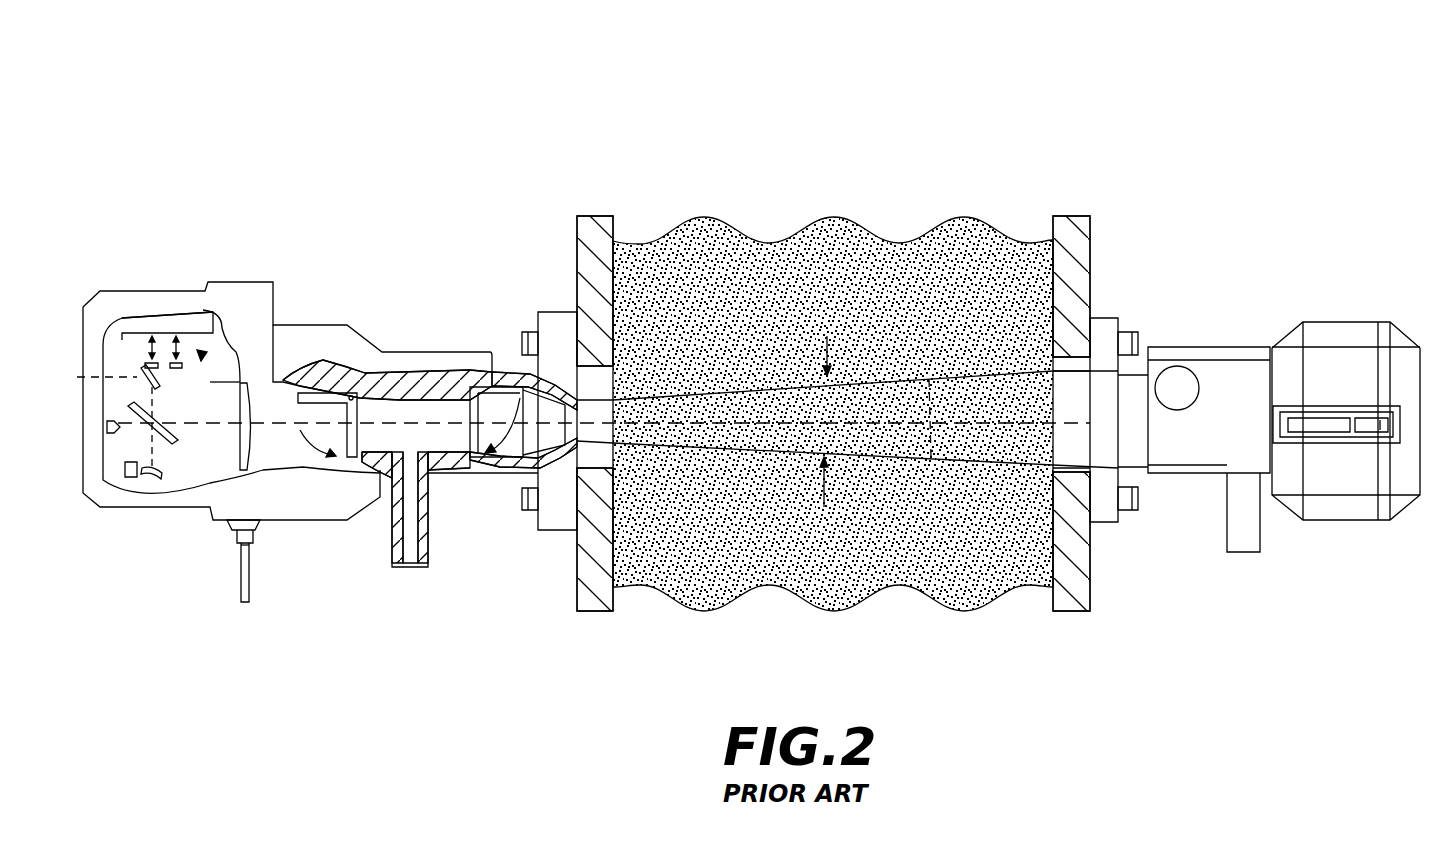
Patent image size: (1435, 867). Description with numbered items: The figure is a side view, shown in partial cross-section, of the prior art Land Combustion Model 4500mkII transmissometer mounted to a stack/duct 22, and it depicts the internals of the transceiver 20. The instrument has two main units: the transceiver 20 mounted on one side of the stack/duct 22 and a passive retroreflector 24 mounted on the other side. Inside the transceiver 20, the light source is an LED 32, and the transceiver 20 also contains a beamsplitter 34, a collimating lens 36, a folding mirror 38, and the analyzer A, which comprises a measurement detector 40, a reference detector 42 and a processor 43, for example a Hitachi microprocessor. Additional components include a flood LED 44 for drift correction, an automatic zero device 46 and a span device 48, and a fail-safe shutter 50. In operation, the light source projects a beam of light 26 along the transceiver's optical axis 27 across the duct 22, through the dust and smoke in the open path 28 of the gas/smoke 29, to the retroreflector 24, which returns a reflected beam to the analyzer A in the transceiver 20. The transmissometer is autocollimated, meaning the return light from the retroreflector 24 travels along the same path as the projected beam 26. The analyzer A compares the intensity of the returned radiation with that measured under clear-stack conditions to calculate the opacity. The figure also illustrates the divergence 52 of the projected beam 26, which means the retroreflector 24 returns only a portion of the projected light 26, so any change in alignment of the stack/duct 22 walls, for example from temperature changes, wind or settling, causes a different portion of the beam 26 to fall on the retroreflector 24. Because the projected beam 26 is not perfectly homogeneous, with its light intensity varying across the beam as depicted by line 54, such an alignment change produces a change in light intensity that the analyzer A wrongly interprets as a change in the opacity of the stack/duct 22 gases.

The transceiver 20 is at (181, 212).
The stack/duct 22 is at (577, 250).
The passive retroreflector 24 is at (1282, 292).
The beam of light 26 is at (781, 456).
The optical axis 27 is at (670, 421).
The open path 28 is at (842, 120).
The gas/smoke 29 is at (972, 287).
The LED 32 is at (108, 443).
The beamsplitter 34 is at (274, 318).
The collimating lens 36 is at (258, 452).
The folding mirror 38 is at (152, 480).
The measurement detector 40 is at (115, 310).
The reference detector 42 is at (163, 430).
The processor 43 is at (170, 330).
The flood LED 44 is at (128, 478).
The automatic zero device 46 is at (328, 398).
The span device 48 is at (205, 515).
The fail-safe shutter 50 is at (500, 387).
The divergence 52 is at (835, 347).
The line 54 is at (931, 457).
The analyzer A is at (158, 435).